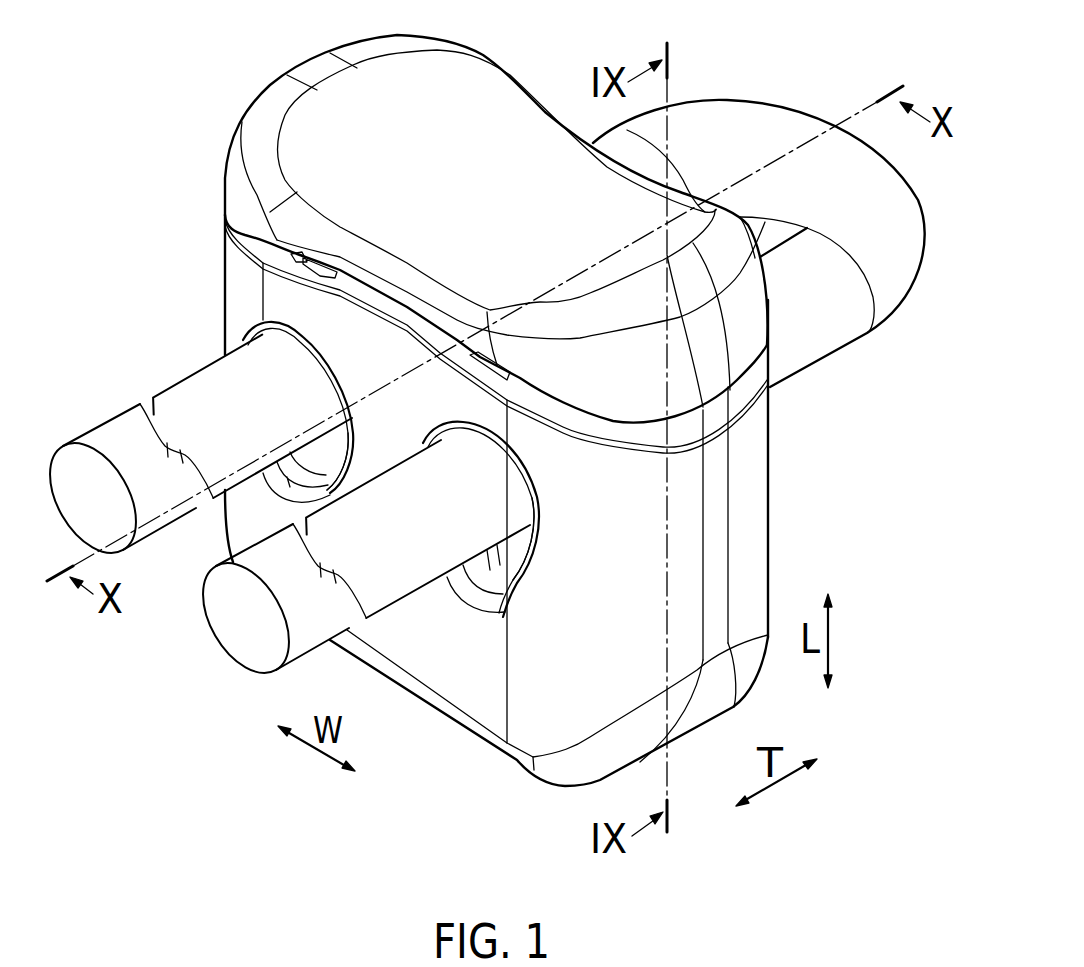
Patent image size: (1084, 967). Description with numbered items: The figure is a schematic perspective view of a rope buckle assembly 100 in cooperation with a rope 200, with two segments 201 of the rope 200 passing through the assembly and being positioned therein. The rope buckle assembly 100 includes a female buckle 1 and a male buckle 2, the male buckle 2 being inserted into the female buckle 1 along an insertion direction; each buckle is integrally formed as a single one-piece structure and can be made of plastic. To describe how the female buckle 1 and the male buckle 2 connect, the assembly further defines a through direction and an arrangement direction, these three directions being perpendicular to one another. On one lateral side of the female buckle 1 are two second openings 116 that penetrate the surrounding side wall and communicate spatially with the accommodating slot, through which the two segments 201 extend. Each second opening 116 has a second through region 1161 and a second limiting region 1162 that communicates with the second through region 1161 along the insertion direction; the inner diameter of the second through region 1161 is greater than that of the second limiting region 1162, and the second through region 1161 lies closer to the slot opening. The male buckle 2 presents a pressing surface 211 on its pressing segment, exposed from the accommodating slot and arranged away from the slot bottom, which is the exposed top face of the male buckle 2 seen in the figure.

The rope buckle assembly 100 is at (158, 189).
The female buckle 1 is at (227, 263).
The male buckle 2 is at (226, 189).
The second opening 116 is at (266, 326).
The second through region 1161 is at (538, 530).
The second limiting region 1162 is at (492, 589).
The rope 200 is at (757, 108).
The segment of the rope 201 is at (187, 393).
The pressing surface 211 is at (471, 87).